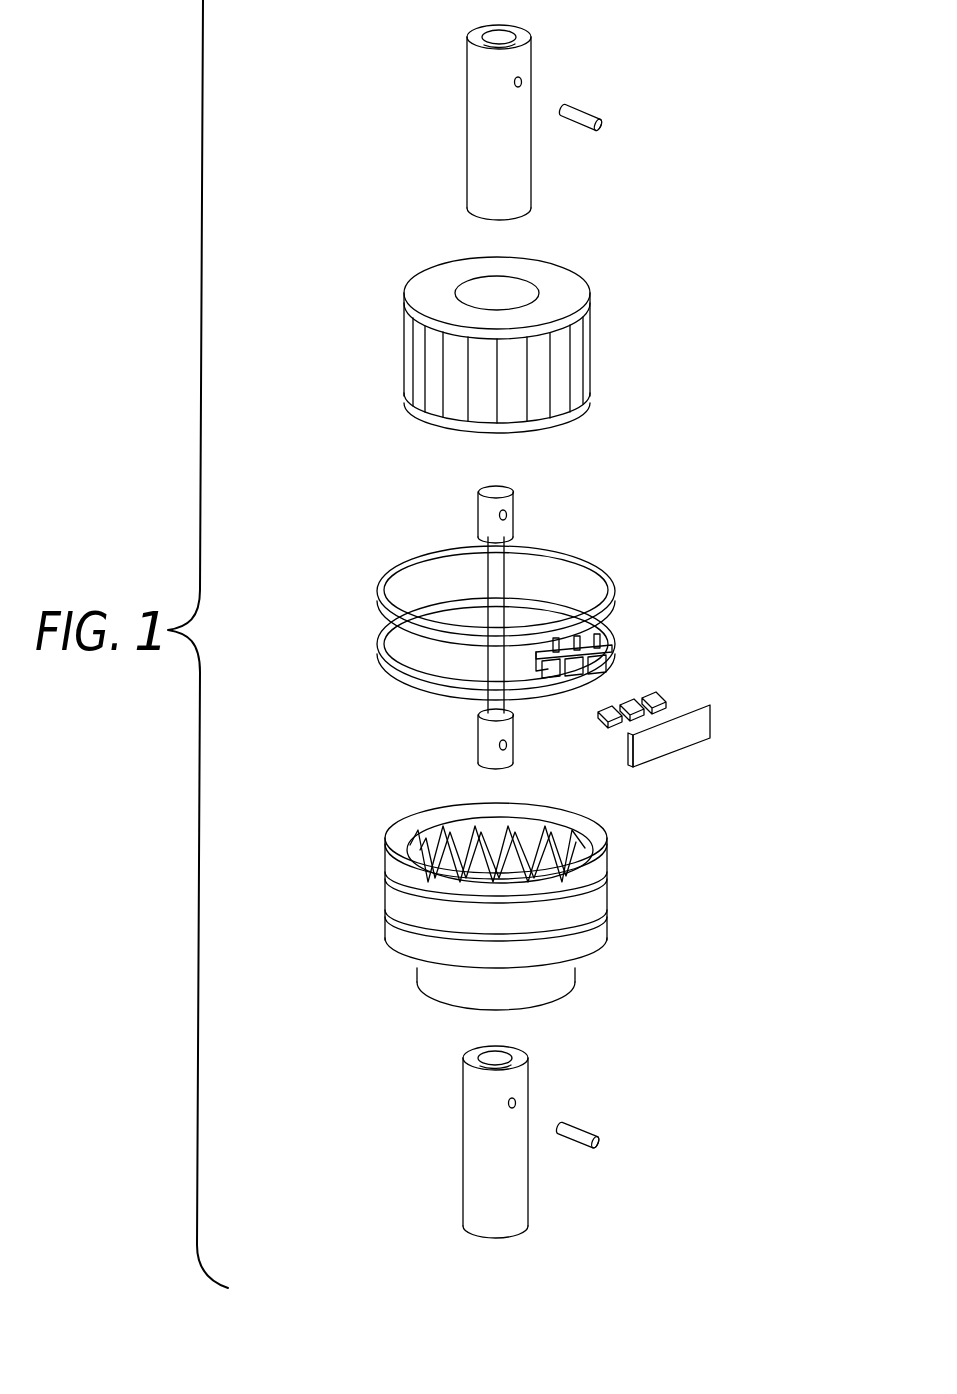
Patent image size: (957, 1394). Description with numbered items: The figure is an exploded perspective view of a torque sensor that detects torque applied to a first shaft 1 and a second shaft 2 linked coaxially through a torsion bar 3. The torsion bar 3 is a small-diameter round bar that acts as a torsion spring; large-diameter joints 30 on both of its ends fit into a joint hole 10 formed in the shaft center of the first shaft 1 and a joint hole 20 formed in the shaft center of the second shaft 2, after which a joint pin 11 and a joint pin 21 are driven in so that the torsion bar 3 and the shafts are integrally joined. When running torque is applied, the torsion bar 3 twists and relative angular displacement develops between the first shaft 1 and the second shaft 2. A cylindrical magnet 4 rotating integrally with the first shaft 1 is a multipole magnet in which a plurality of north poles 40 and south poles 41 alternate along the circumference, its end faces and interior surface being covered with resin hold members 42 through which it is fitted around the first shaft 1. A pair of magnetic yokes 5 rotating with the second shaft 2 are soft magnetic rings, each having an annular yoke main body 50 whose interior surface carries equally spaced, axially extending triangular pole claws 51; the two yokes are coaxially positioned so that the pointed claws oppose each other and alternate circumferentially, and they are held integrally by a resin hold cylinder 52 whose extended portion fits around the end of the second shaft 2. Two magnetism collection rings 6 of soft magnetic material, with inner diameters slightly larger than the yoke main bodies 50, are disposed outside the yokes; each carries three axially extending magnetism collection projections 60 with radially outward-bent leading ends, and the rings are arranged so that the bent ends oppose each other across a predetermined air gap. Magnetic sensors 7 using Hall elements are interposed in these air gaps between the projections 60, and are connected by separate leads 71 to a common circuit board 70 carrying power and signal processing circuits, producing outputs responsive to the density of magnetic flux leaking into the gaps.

The first shaft 1 is at (472, 135).
The joint hole 10 is at (503, 38).
The joint pin 11 is at (585, 110).
The second shaft 2 is at (470, 1140).
The joint hole 20 is at (498, 1058).
The joint pin 21 is at (585, 1125).
The torsion bar 3 is at (490, 576).
The joint 30 is at (479, 517).
The cylindrical magnet 4 is at (464, 351).
The north pole 40 is at (485, 347).
The south pole 41 is at (495, 424).
The hold member 42 is at (467, 336).
The magnetic yoke 5 is at (487, 897).
The yoke main body 50 is at (384, 890).
The pole claw 51 is at (410, 840).
The hold cylinder 52 is at (608, 920).
The magnetism collection ring 6 is at (378, 603).
The magnetism collection projection 60 is at (610, 656).
The magnetic sensor 7 is at (662, 717).
The circuit board 70 is at (712, 726).
The lead 71 is at (668, 700).